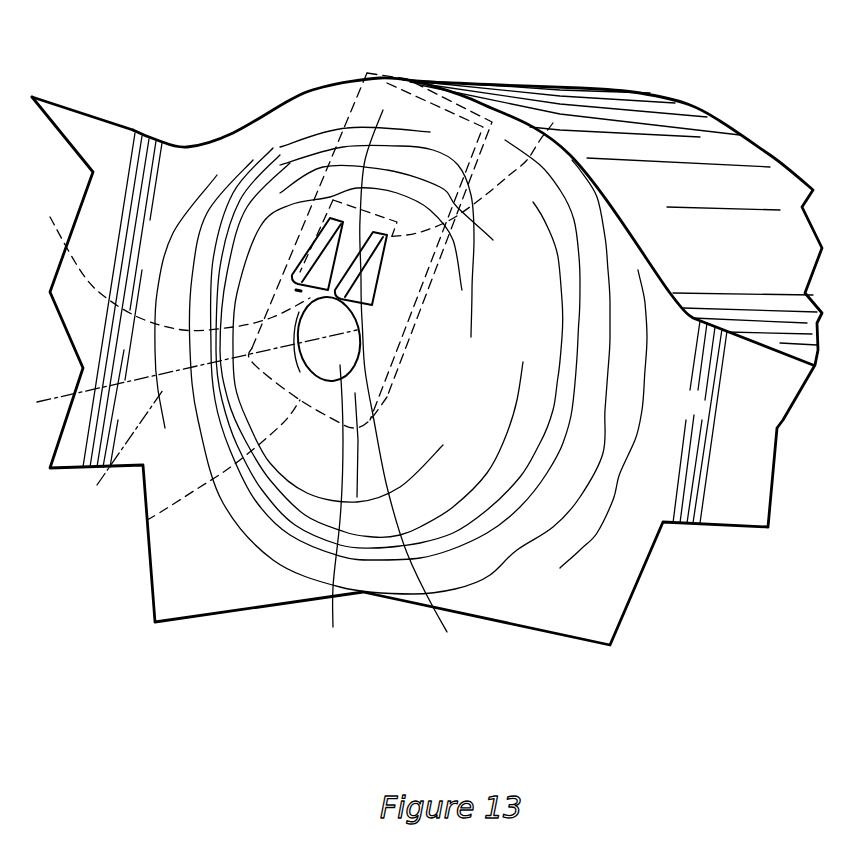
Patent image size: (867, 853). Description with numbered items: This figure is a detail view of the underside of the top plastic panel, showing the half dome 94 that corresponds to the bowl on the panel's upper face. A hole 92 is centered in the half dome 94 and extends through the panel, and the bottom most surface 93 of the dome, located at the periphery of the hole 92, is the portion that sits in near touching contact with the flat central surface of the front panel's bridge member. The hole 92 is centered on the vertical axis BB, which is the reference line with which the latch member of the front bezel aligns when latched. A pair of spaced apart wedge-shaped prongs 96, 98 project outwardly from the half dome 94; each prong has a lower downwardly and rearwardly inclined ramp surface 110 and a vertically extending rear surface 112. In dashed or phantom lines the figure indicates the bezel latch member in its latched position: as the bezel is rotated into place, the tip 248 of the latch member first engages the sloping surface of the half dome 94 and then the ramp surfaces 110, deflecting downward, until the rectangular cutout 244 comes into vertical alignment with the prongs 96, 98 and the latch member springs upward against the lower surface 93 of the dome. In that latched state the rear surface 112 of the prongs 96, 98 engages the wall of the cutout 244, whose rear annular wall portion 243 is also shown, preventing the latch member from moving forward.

The hole 92 is at (275, 560).
The bottom most surface 93 is at (330, 511).
The half dome 94 is at (475, 390).
The wedge-shaped prong 96 is at (326, 200).
The wedge-shaped prong 98 is at (365, 273).
The ramp surface 110 is at (380, 112).
The rear surface 112 is at (417, 389).
The rear annular wall portion 243 is at (168, 262).
The rectangular cutout 244 is at (553, 123).
The tip 248 is at (147, 520).
The vertical axis BB is at (197, 419).